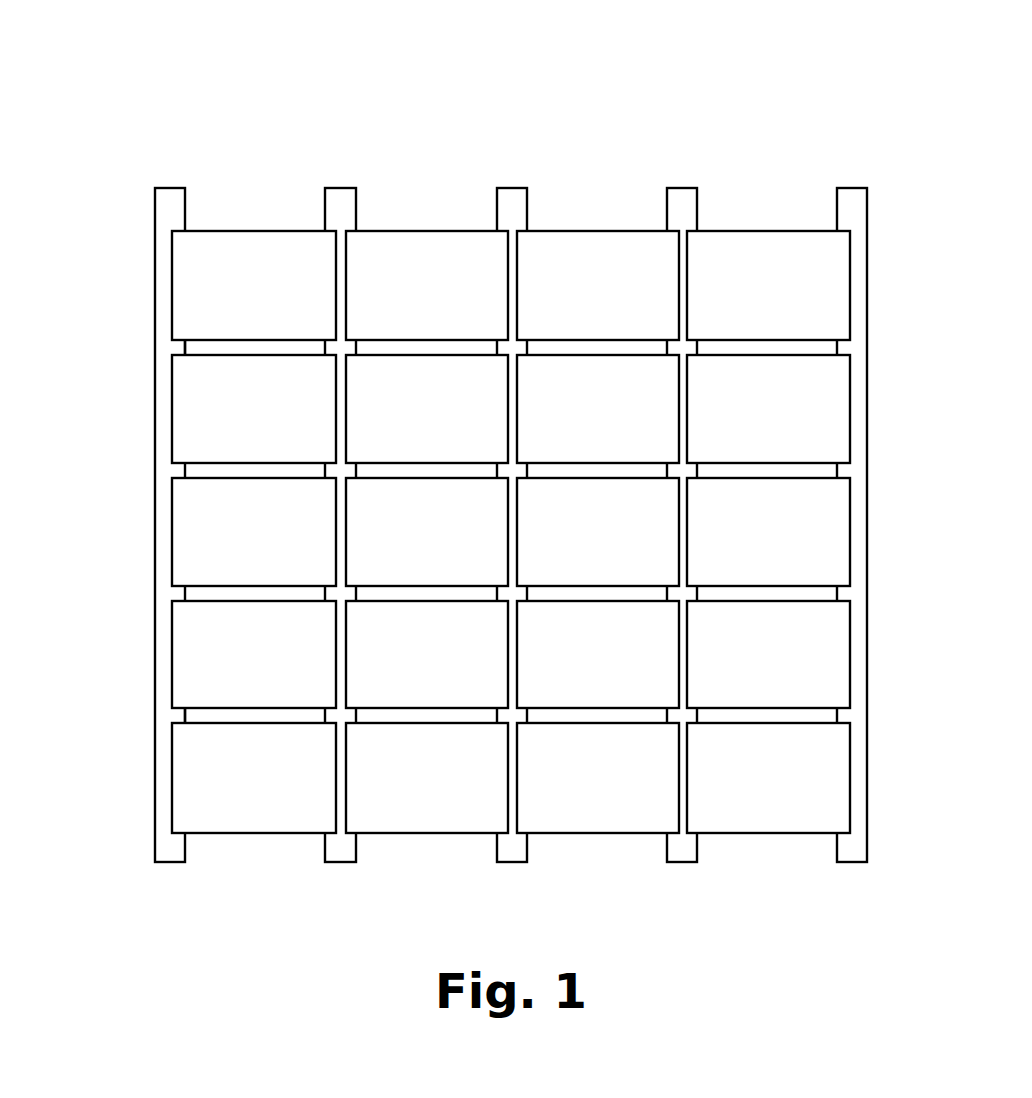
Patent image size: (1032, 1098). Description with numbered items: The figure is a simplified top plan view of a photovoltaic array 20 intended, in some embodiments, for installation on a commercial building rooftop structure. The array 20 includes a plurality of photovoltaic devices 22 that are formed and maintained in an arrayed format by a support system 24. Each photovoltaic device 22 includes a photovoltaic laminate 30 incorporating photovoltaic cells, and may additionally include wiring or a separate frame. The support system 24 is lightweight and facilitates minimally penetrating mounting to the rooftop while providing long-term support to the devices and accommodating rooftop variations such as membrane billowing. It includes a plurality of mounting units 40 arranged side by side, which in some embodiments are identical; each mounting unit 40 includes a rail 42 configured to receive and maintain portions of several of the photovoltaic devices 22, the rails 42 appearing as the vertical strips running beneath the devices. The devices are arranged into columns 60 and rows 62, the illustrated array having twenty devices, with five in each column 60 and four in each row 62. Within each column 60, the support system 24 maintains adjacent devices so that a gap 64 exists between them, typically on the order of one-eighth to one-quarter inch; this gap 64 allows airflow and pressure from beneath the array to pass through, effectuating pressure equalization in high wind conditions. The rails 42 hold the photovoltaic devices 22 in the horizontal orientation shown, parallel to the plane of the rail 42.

The photovoltaic array 20 is at (333, 49).
The photovoltaic device 22 is at (812, 423).
The support system 24 is at (677, 872).
The photovoltaic laminate 30 is at (770, 232).
The mounting unit 40 is at (511, 180).
The rail 42 is at (352, 205).
The column 60 is at (256, 200).
The row 62 is at (148, 262).
The gap 64 is at (192, 346).